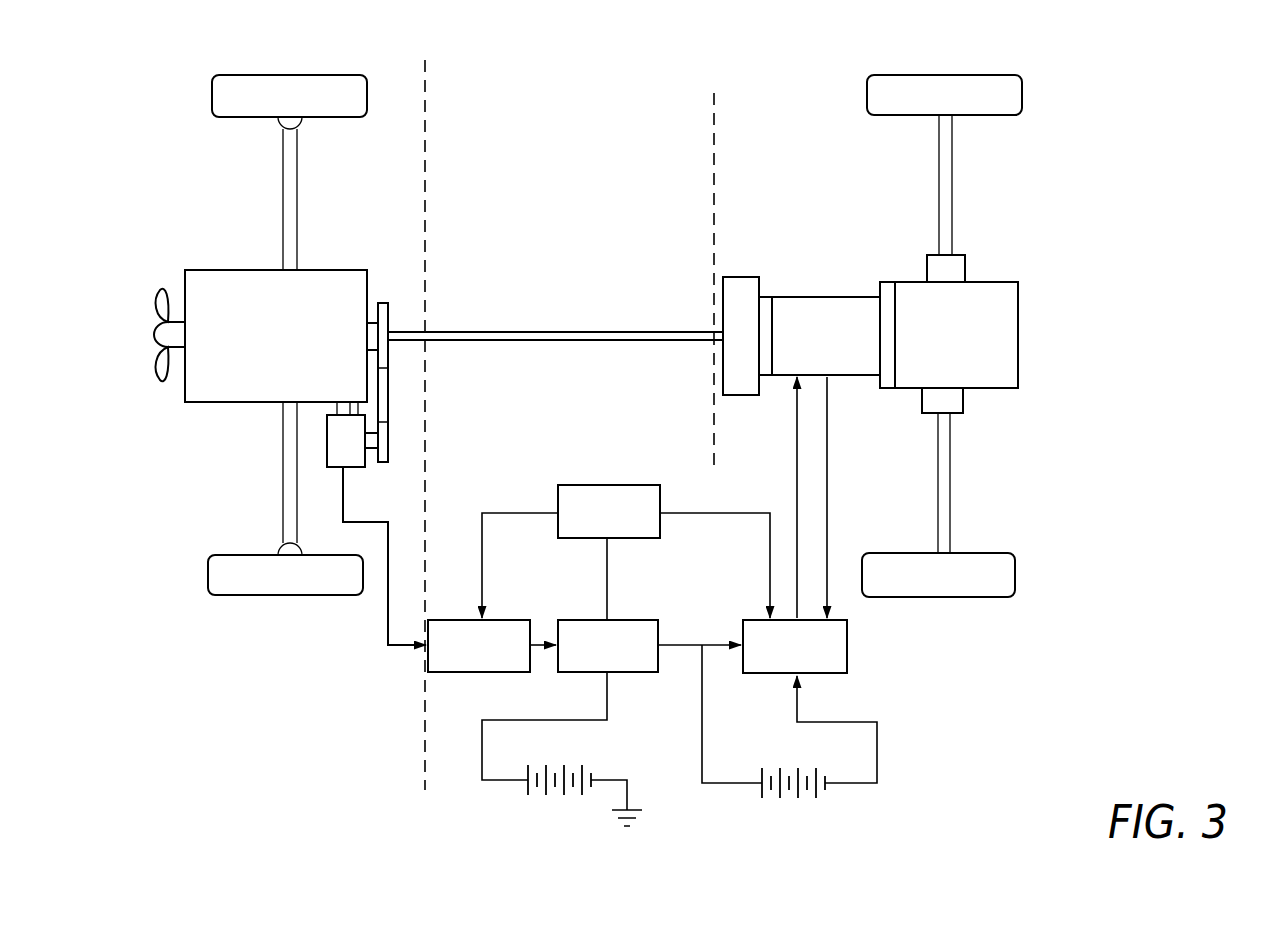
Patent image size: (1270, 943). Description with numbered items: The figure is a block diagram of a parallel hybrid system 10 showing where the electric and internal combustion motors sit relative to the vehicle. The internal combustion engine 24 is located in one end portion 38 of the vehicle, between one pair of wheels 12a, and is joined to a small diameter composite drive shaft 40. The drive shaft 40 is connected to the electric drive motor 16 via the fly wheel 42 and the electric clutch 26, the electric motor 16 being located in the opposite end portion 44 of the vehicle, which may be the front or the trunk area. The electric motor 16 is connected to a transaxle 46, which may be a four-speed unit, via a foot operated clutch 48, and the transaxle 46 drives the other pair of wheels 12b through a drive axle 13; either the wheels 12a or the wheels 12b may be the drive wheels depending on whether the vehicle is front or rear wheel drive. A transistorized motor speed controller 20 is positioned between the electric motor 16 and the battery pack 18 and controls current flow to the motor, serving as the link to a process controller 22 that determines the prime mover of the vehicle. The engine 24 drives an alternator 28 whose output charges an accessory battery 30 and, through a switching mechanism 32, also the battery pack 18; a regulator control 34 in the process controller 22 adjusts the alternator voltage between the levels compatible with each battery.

The parallel hybrid system 10 is at (601, 108).
The wheels 12a is at (223, 107).
The wheels 12b is at (1002, 108).
The drive axle 13 is at (950, 477).
The electric drive motor 16 is at (837, 296).
The battery pack 18 is at (803, 800).
The motor speed controller 20 is at (847, 645).
The process controller 22 is at (650, 538).
The engine 24 is at (326, 269).
The electric clutch 26 is at (768, 293).
The alternator 28 is at (367, 467).
The accessory battery 30 is at (555, 798).
The switching mechanism 32 is at (658, 620).
The regulator control 34 is at (450, 672).
The end portion 38 is at (427, 52).
The composite drive shaft 40 is at (632, 330).
The fly wheel 42 is at (719, 273).
The end portion 44 is at (714, 93).
The transaxle 46 is at (1012, 333).
The foot operated clutch 48 is at (882, 280).